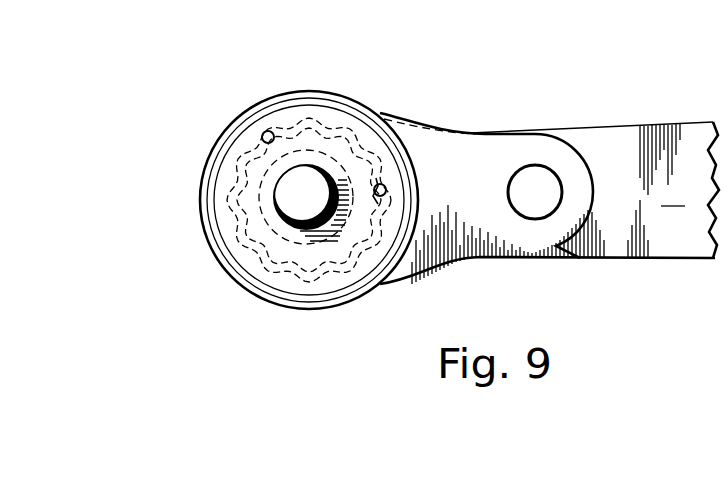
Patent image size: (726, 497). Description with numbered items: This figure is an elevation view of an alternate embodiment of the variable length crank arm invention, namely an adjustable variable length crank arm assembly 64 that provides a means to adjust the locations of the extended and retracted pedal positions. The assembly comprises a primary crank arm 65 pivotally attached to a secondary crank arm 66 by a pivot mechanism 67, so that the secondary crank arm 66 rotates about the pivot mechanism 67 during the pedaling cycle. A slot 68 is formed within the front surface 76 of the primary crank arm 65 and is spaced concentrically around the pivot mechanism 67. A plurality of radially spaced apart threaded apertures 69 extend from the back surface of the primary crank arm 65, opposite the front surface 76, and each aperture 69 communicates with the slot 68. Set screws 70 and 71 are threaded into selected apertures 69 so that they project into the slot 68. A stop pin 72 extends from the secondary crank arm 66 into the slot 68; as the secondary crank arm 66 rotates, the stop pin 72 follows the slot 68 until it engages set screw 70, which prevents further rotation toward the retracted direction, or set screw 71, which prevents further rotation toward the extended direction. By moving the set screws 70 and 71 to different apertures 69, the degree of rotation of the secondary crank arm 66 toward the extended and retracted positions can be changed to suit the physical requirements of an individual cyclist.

The adjustable variable length crank arm assembly 64 is at (495, 122).
The primary crank arm 65 is at (612, 128).
The secondary crank arm 66 is at (452, 218).
The pivot mechanism 67 is at (290, 194).
The slot 68 is at (323, 123).
The threaded apertures 69 is at (300, 118).
The set screw 70 is at (385, 192).
The set screw 71 is at (262, 130).
The stop pin 72 is at (377, 183).
The front surface 76 is at (673, 190).